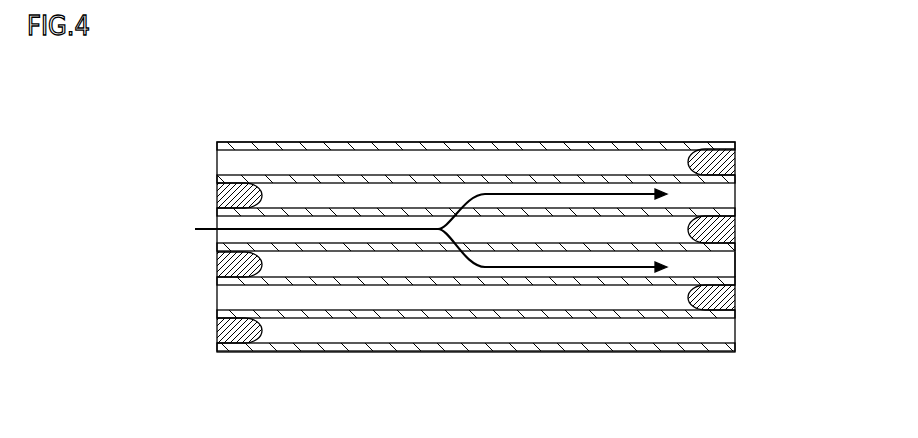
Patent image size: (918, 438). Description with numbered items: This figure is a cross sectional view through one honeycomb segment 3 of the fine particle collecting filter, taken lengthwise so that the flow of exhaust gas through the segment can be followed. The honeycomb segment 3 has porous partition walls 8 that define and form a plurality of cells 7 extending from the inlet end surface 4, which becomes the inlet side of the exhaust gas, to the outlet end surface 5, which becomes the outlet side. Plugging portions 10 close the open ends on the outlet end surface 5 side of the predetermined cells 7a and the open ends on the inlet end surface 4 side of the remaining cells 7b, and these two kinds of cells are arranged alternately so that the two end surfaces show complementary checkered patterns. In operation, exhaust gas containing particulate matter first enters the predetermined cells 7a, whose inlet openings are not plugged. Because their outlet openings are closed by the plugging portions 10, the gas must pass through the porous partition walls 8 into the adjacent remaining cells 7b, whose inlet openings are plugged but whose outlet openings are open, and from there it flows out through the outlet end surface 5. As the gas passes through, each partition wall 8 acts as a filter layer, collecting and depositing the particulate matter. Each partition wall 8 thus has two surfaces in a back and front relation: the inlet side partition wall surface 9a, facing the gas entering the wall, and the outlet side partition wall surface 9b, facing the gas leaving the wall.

The honeycomb segment 3 is at (615, 137).
The inlet end surface 4 is at (217, 288).
The outlet end surface 5 is at (735, 268).
The cell 7 is at (133, 102).
The predetermined cell 7a is at (240, 163).
The remaining cell 7b is at (235, 193).
The porous partition wall 8 is at (360, 214).
The inlet side partition wall surface 9a is at (400, 220).
The outlet side partition wall surface 9b is at (410, 214).
The plugging portion 10 is at (270, 200).